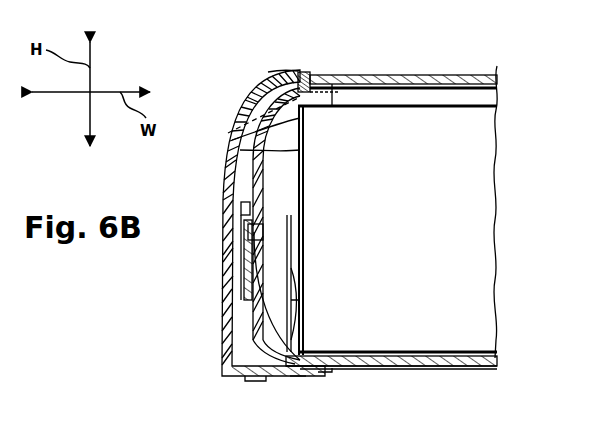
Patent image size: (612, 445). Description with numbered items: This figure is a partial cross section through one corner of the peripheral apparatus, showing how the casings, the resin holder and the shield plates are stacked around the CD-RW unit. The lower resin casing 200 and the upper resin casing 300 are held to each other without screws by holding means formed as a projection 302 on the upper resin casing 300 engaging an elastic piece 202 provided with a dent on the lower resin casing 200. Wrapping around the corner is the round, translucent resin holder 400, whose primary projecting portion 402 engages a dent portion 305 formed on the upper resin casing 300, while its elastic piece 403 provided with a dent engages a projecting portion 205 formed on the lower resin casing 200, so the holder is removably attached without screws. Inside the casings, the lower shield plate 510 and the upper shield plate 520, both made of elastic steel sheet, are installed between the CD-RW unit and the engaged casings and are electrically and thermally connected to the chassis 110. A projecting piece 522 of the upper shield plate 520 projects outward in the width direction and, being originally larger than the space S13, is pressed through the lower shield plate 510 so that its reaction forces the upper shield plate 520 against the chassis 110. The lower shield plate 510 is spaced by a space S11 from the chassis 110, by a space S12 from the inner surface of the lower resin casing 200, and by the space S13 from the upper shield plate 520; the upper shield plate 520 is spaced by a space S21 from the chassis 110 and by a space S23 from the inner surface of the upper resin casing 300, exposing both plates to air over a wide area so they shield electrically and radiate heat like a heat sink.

The chassis 110 is at (432, 108).
The lower resin casing 200 is at (490, 366).
The elastic piece 202 is at (245, 252).
The projecting portion 205 is at (330, 372).
The upper resin casing 300 is at (486, 68).
The projection 302 is at (243, 210).
The dent portion 305 is at (312, 72).
The resin holder 400 is at (222, 322).
The primary projecting portion 402 is at (290, 72).
The elastic piece 403 is at (298, 377).
The lower shield plate 510 is at (288, 244).
The upper shield plate 520 is at (430, 78).
The projecting piece 522 is at (300, 284).
The space S11 is at (460, 352).
The space S12 is at (250, 232).
The space S13 is at (303, 237).
The space S21 is at (414, 99).
The space S23 is at (410, 78).